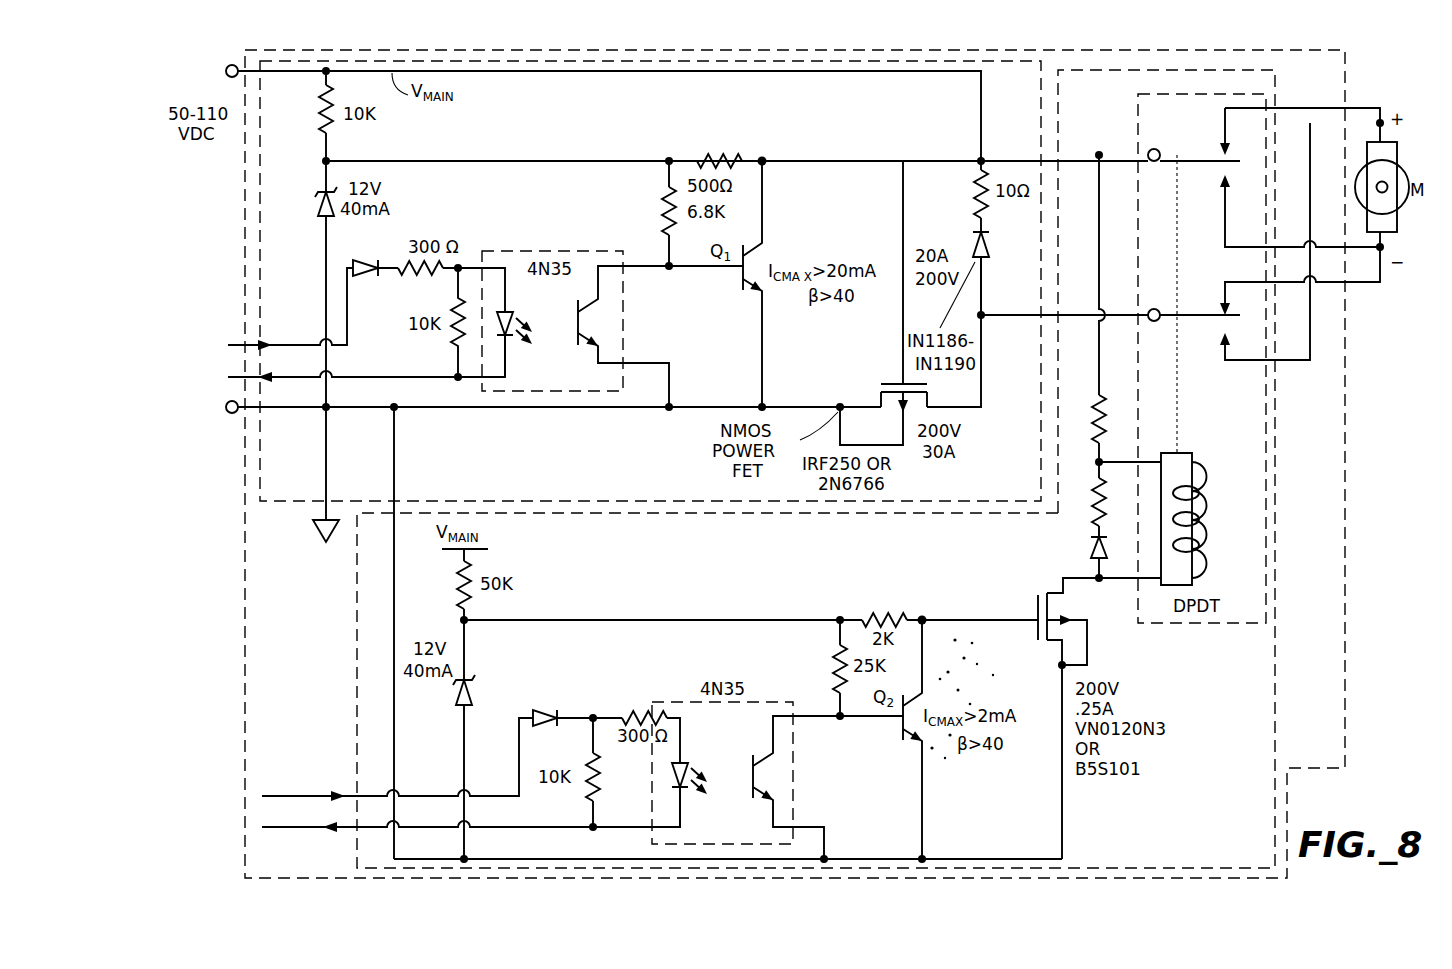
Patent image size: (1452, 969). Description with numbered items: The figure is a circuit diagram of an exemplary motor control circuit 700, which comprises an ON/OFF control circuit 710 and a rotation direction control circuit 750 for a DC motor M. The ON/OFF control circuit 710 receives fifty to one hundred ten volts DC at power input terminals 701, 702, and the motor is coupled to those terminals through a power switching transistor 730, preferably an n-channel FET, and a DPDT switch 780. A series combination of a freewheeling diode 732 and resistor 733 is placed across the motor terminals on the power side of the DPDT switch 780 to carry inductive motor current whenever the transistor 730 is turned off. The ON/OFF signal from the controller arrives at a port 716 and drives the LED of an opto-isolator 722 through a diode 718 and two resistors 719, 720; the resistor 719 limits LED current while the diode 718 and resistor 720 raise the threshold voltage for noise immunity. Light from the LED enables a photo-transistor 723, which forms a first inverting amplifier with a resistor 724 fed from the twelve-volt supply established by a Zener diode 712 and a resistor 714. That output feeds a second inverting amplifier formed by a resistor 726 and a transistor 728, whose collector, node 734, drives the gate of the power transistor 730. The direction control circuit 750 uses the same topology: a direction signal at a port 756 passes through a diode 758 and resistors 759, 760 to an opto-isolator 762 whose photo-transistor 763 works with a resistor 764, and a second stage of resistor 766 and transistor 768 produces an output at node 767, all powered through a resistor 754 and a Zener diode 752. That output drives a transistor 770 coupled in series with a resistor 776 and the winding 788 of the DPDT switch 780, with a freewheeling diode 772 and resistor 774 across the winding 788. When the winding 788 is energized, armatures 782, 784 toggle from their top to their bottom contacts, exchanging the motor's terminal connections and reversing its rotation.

The motor control circuit 700 is at (1345, 410).
The power input terminal 701 is at (226, 71).
The power input terminal 702 is at (230, 413).
The ON/OFF control circuit 710 is at (260, 222).
The Zener diode 712 is at (326, 228).
The resistor 714 is at (326, 135).
The port 716 is at (258, 375).
The diode 718 is at (356, 262).
The resistor 719 is at (420, 276).
The resistor 720 is at (458, 342).
The opto-isolator 722 is at (548, 251).
The photo-transistor 723 is at (575, 325).
The resistor 724 is at (663, 205).
The resistor 726 is at (712, 158).
The transistor 728 is at (741, 272).
The power switching transistor 730 is at (893, 384).
The freewheeling diode 732 is at (972, 238).
The resistor 733 is at (975, 180).
The node 734 is at (766, 158).
The rotation direction control circuit 750 is at (1276, 660).
The Zener diode 752 is at (458, 706).
The resistor 754 is at (458, 582).
The port 756 is at (316, 827).
The diode 758 is at (548, 705).
The resistor 759 is at (630, 712).
The resistor 760 is at (590, 800).
The opto-isolator 762 is at (680, 702).
The photo-transistor 763 is at (750, 772).
The resistor 764 is at (836, 668).
The resistor 766 is at (866, 612).
The node 767 is at (922, 612).
The transistor 768 is at (901, 726).
The transistor 770 is at (1035, 606).
The freewheeling diode 772 is at (1091, 548).
The resistor 774 is at (1099, 502).
The resistor 776 is at (1099, 400).
The DPDT switch 780 is at (1138, 138).
The armature 782 is at (1212, 152).
The armature 784 is at (1196, 312).
The winding 788 is at (1185, 453).